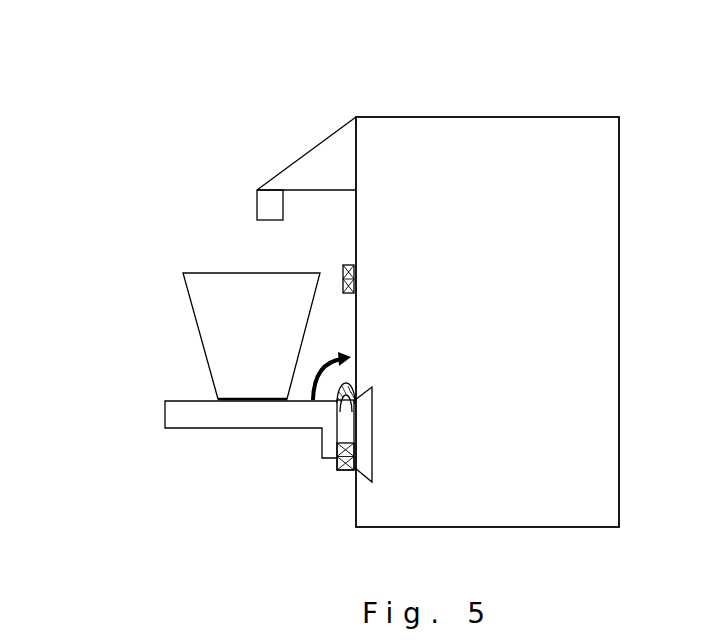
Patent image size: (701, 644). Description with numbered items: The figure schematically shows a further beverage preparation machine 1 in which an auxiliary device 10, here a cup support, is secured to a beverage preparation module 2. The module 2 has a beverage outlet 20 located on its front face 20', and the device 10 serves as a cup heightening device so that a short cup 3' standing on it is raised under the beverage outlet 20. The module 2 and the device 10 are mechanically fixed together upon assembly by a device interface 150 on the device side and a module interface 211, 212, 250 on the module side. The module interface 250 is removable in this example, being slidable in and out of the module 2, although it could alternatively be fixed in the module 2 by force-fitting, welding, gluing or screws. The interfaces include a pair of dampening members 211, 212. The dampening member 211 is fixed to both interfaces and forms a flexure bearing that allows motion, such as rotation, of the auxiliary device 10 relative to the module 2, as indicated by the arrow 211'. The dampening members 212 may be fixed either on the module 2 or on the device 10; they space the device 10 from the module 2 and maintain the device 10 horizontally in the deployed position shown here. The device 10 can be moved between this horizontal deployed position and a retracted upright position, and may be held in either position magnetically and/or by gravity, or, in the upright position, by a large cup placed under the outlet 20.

The beverage preparation machine 1 is at (94, 77).
The beverage preparation module 2 is at (640, 141).
The auxiliary device 10 is at (156, 359).
The beverage outlet 20 is at (264, 168).
The machine front face 20' is at (322, 254).
The dampening member 212 is at (343, 275).
The short cup 3' is at (251, 336).
The device interface 150 is at (327, 435).
The dampening member 211 is at (385, 394).
The arrow 211' is at (382, 328).
The module interface 250 is at (365, 425).